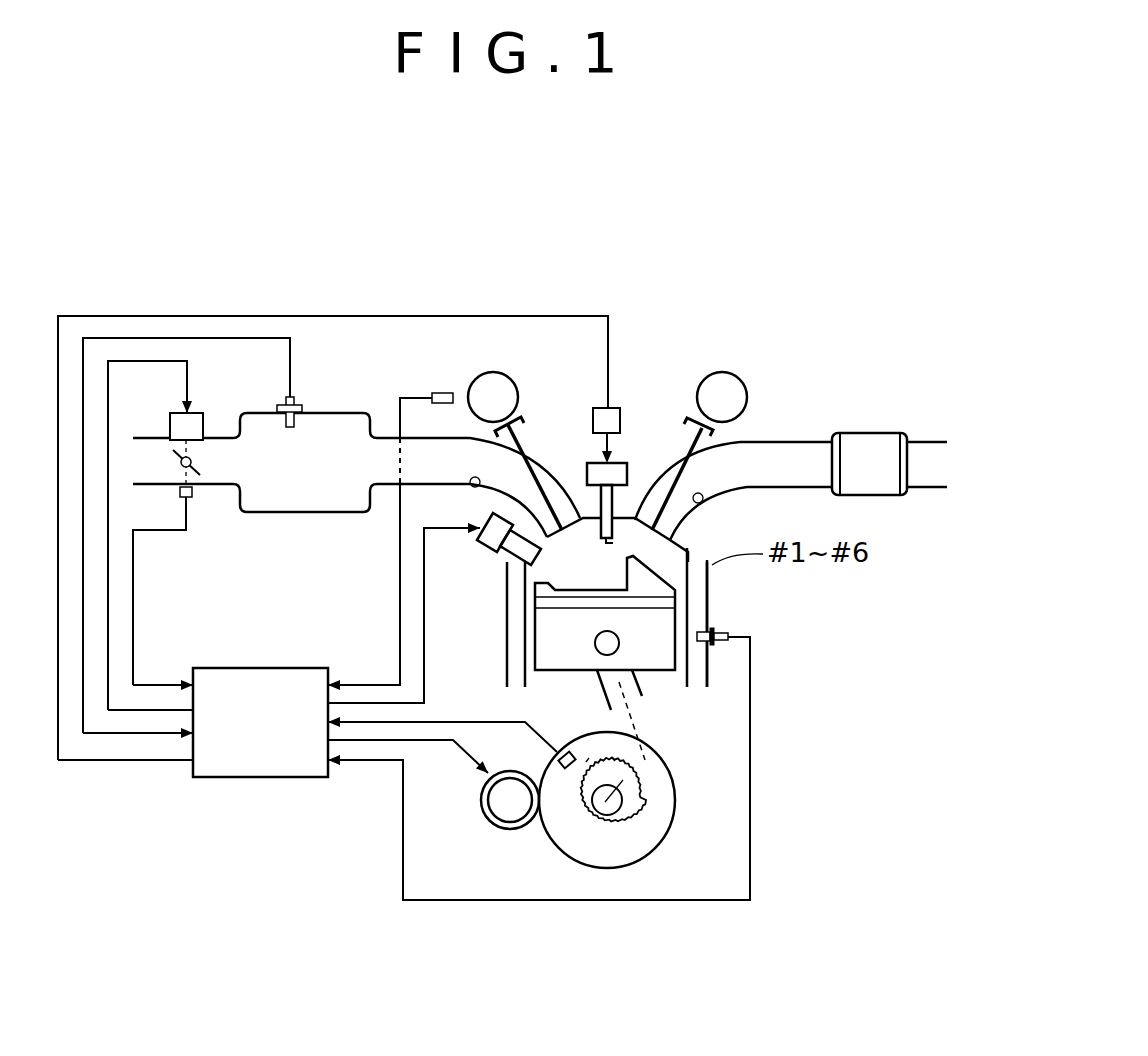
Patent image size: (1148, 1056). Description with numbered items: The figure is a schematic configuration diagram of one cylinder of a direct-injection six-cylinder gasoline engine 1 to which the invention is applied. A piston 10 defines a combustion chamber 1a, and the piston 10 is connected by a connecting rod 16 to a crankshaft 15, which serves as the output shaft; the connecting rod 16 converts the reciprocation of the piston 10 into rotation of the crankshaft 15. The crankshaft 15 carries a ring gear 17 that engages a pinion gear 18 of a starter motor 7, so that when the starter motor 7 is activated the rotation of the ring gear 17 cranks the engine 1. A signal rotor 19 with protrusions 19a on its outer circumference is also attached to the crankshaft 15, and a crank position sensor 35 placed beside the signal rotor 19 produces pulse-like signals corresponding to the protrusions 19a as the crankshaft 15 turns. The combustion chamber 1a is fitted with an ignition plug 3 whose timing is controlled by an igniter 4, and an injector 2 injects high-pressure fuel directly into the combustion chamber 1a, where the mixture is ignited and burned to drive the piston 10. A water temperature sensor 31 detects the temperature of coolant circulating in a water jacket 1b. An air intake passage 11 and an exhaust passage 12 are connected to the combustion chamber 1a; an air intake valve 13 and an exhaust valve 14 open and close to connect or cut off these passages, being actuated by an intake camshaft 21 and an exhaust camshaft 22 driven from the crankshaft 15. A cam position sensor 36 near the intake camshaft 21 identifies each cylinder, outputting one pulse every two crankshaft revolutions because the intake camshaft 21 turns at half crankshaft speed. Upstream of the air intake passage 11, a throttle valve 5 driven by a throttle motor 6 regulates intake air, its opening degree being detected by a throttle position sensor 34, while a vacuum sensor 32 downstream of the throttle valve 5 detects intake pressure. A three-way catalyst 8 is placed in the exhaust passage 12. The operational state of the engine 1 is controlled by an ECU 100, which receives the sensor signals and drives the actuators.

The engine 1 is at (493, 663).
The combustion chamber 1a is at (570, 573).
The water jacket 1b is at (698, 597).
The injector 2 is at (480, 550).
The ignition plug 3 is at (625, 464).
The igniter 4 is at (612, 408).
The throttle valve 5 is at (200, 473).
The throttle motor 6 is at (196, 413).
The starter motor 7 is at (486, 803).
The three-way catalyst 8 is at (860, 433).
The piston 10 is at (553, 637).
The air intake passage 11 is at (470, 486).
The exhaust passage 12 is at (702, 503).
The air intake valve 13 is at (565, 516).
The exhaust valve 14 is at (652, 510).
The crankshaft 15 is at (609, 811).
The connecting rod 16 is at (637, 676).
The ring gear 17 is at (562, 852).
The pinion gear 18 is at (513, 816).
The signal rotor 19 is at (634, 808).
The protrusions 19a is at (613, 757).
The intake camshaft 21 is at (498, 395).
The exhaust camshaft 22 is at (722, 385).
The water temperature sensor 31 is at (716, 630).
The vacuum sensor 32 is at (298, 397).
The throttle position sensor 34 is at (192, 498).
The crank position sensor 35 is at (560, 754).
The cam position sensor 36 is at (438, 393).
The ECU 100 is at (255, 667).